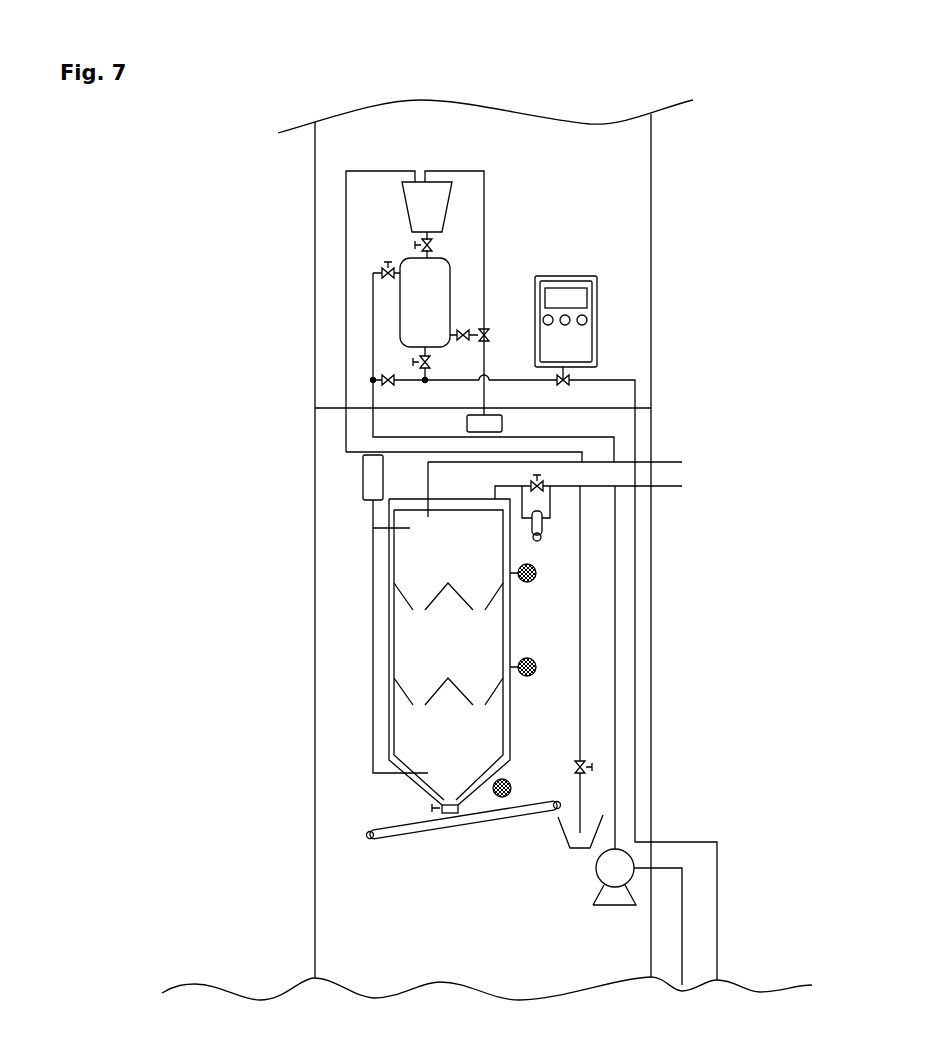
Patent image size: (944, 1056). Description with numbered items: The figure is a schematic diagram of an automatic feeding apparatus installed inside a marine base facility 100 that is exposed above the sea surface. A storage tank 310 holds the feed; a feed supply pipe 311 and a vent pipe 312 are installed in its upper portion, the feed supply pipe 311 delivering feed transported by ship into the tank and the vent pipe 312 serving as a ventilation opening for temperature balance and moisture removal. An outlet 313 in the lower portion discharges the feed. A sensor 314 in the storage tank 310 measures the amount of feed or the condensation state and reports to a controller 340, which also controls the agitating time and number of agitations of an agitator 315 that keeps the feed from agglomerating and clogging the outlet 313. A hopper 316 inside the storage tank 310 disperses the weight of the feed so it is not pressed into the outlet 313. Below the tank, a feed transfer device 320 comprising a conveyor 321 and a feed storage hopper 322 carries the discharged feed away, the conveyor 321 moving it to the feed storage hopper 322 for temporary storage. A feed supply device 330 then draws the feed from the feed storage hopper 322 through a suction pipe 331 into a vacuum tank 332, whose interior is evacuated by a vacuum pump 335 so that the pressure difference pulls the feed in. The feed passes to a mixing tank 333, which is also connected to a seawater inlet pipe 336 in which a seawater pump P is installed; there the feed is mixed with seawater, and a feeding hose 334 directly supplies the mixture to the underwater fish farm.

The marine base facility 100 is at (652, 152).
The storage tank 310 is at (389, 640).
The feed supply pipe 311 is at (665, 460).
The vent pipe 312 is at (665, 488).
The outlet 313 is at (433, 803).
The sensor 314 is at (538, 667).
The agitator 315 is at (363, 477).
The hopper 316 is at (428, 597).
The feed transfer device 320 is at (523, 832).
The conveyor 321 is at (415, 836).
The feed storage hopper 322 is at (603, 826).
The feed supply device 330 is at (337, 238).
The suction pipe 331 is at (346, 350).
The vacuum tank 332 is at (413, 202).
The mixing tank 333 is at (410, 297).
The feeding hose 334 is at (695, 841).
The vacuum pump 335 is at (503, 423).
The seawater inlet pipe 336 is at (373, 323).
The controller 340 is at (602, 288).
The seawater pump P is at (630, 896).